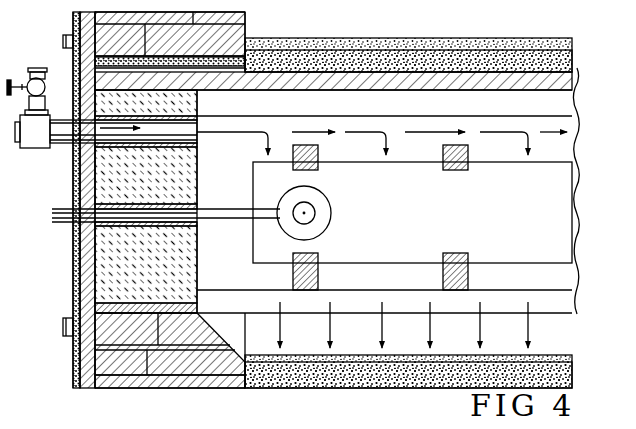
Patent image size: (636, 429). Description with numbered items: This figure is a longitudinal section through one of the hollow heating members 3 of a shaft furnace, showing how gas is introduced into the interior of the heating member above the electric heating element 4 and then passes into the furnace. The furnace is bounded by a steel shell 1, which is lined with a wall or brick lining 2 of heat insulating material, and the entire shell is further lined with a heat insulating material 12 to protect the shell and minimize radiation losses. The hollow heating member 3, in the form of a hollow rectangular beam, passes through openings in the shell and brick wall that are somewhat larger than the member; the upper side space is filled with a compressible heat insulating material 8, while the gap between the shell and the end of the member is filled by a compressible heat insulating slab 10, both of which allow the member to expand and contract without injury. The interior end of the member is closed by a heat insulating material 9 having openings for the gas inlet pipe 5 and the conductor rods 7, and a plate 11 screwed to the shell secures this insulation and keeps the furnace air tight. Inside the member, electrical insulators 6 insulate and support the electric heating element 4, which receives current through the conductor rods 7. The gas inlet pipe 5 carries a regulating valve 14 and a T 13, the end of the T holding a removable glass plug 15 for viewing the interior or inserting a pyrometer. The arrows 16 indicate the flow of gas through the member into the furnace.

The steel shell 1 is at (73, 350).
The wall or brick lining 2 is at (127, 368).
The hollow heating member 3 is at (574, 80).
The electric heating element 4 is at (538, 213).
The gas inlet pipe 5 is at (197, 133).
The electrical insulator 6 is at (318, 170).
The conductor rod 7 is at (73, 213).
The compressible heat insulating material 8 is at (245, 63).
The heat insulating material 9 is at (130, 254).
The compressible heat insulating slab 10 is at (78, 272).
The plate 11 is at (80, 303).
The heat insulating material 12 is at (82, 384).
The T 13 is at (35, 117).
The regulating valve 14 is at (26, 76).
The removable glass plug 15 is at (10, 132).
The air flow 16 is at (590, 338).